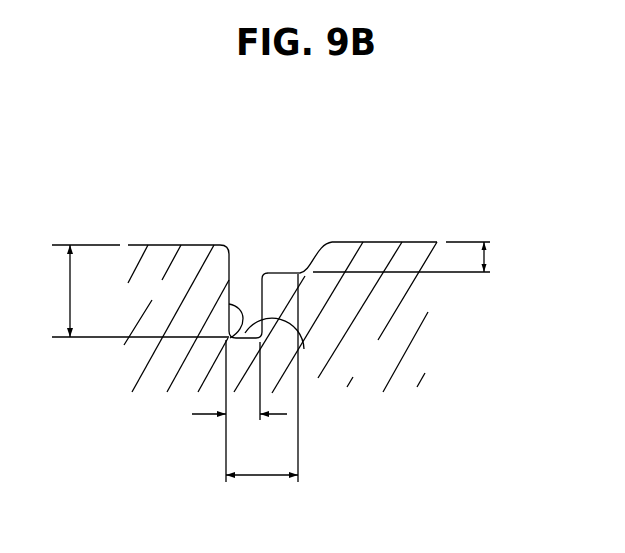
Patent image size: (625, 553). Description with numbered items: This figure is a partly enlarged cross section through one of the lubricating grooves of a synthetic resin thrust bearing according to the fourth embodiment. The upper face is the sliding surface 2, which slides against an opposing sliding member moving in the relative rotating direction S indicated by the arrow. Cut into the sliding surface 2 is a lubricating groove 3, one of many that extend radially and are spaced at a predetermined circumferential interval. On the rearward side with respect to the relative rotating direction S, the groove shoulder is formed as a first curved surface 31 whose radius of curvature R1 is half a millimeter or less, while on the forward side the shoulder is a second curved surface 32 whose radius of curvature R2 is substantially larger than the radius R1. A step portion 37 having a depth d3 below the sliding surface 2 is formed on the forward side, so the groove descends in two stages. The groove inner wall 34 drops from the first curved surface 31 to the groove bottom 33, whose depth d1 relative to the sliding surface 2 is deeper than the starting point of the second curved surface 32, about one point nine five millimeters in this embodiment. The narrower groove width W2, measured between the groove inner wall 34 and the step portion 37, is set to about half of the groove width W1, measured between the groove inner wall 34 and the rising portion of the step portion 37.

The sliding surface 2 is at (167, 245).
The lubricating groove 3 is at (271, 237).
The first curved surface 31 is at (224, 246).
The second curved surface 32 is at (335, 240).
The groove bottom 33 is at (304, 349).
The groove inner wall 34 is at (228, 338).
The step portion 37 is at (284, 268).
The depth of groove bottom d1 is at (133, 291).
The depth of step portion d3 is at (417, 260).
The groove width W1 is at (262, 395).
The groove width W2 is at (239, 411).
The radius of curvature R1 is at (223, 249).
The radius of curvature R2 is at (334, 247).
The relative rotating direction S is at (437, 228).